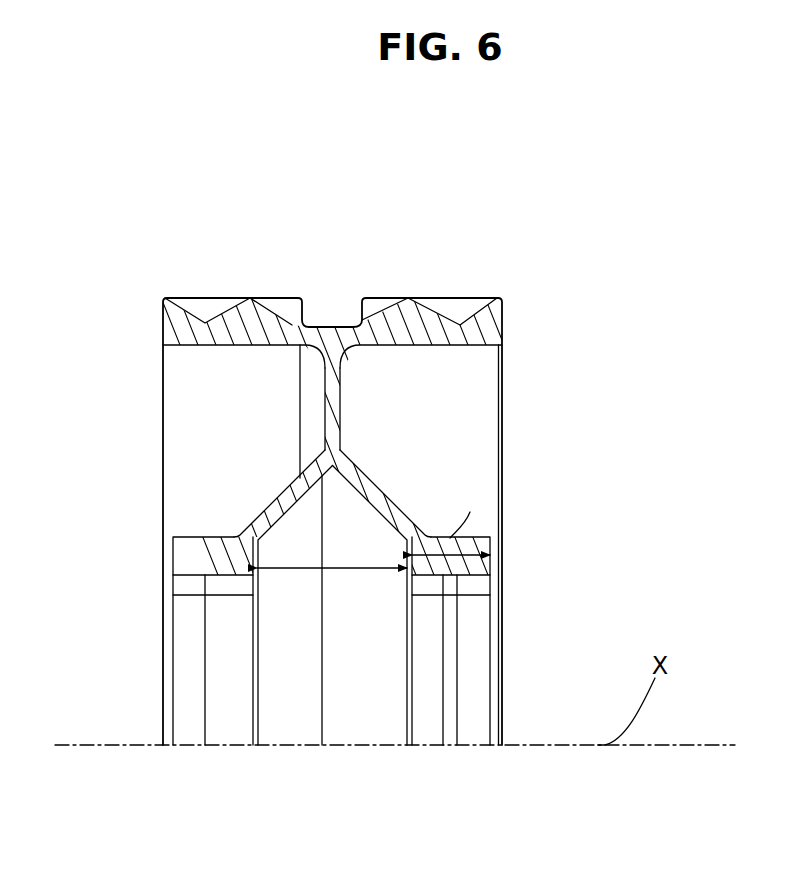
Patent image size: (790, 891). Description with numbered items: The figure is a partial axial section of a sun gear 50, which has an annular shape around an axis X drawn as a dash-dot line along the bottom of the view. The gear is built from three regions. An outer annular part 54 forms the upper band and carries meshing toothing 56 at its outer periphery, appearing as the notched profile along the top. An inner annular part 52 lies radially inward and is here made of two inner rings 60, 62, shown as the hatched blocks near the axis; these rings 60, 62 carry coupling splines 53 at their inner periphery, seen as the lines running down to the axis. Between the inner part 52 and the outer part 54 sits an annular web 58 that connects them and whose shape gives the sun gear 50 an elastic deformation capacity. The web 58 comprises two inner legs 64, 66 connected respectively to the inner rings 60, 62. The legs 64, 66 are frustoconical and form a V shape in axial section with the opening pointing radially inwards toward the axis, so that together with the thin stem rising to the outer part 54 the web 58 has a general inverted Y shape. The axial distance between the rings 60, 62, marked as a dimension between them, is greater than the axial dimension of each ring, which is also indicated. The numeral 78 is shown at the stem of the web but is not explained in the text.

The sun gear 50 is at (617, 334).
The inner annular part 52 is at (508, 562).
The coupling splines 53 is at (205, 653).
The outer annular part 54 is at (394, 271).
The meshing toothing 56 is at (284, 305).
The annular web 58 is at (437, 465).
The inner ring 60 is at (187, 562).
The inner ring 62 is at (465, 568).
The inner leg 64 is at (272, 517).
The inner leg 66 is at (395, 505).
The neck web 78 is at (338, 417).